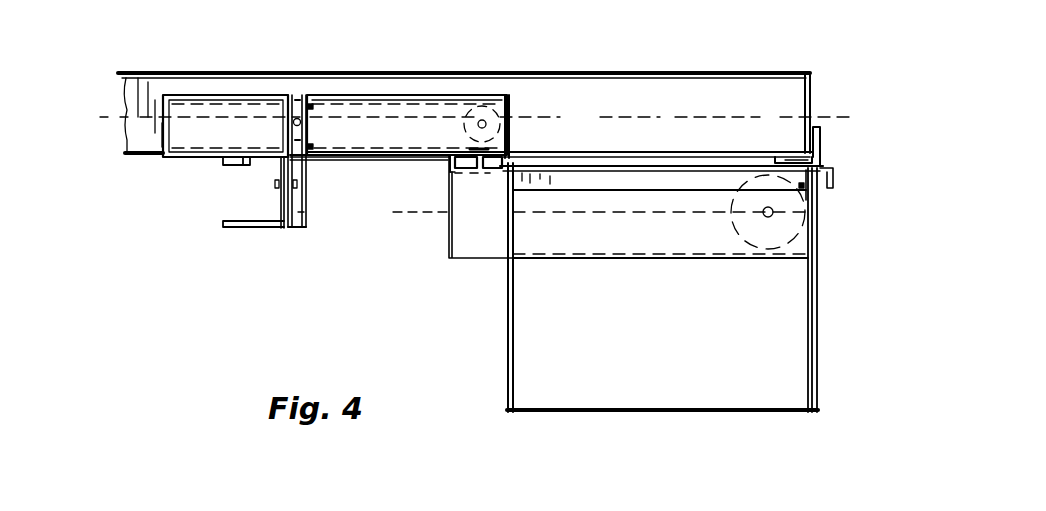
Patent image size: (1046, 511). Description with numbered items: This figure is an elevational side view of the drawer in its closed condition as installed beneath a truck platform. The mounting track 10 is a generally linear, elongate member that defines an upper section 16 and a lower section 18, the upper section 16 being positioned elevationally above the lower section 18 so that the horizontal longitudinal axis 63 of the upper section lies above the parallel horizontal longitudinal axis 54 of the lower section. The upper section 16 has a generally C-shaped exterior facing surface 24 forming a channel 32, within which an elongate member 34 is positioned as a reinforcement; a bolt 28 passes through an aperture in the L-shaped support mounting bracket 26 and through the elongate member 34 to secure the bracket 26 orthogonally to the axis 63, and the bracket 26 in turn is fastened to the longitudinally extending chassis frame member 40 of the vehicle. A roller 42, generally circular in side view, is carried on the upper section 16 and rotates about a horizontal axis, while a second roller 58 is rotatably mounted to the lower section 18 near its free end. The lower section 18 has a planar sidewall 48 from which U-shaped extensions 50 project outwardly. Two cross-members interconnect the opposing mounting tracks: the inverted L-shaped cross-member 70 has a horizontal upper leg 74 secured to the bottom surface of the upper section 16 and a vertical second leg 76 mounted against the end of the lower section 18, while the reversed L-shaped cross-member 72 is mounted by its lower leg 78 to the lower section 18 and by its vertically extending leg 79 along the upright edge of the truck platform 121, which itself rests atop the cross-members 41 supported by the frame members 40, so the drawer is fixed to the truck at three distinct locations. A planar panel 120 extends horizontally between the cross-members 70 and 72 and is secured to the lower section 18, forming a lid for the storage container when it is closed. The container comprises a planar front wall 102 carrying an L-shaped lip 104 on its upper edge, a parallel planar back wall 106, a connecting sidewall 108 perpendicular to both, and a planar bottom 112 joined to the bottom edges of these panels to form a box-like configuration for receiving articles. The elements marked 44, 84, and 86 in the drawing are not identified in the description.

The mounting track 10 is at (217, 142).
The upper section 16 is at (256, 98).
The lower section 18 is at (578, 233).
The exterior facing surface 24 is at (350, 153).
The support mounting bracket 26 is at (308, 212).
The bolt 28 is at (303, 124).
The channel 32 is at (273, 143).
The elongate member 34 is at (300, 97).
The chassis frame member 40 is at (247, 230).
The cross-members 41 is at (137, 136).
The roller 42 is at (508, 138).
The roller 44 is at (487, 119).
The sidewall 48 is at (632, 258).
The U-shaped extensions 50 is at (687, 260).
The longitudinal axis 54 is at (554, 216).
The second roller 58 is at (742, 230).
The longitudinal axis 63 is at (216, 113).
The cross-member 70 is at (448, 170).
The second cross-member 72 is at (820, 144).
The upper leg 74 is at (356, 153).
The second leg 76 is at (447, 190).
The lower leg 78 is at (793, 155).
The vertically extending leg 79 is at (823, 148).
The upper housing box 84 is at (371, 108).
The base plate 86 is at (374, 160).
The front wall 102 is at (818, 348).
The lip 104 is at (828, 190).
The back wall 106 is at (508, 353).
The sidewall 108 is at (668, 378).
The bottom 112 is at (608, 412).
The panel 120 is at (658, 152).
The platform 121 is at (532, 72).